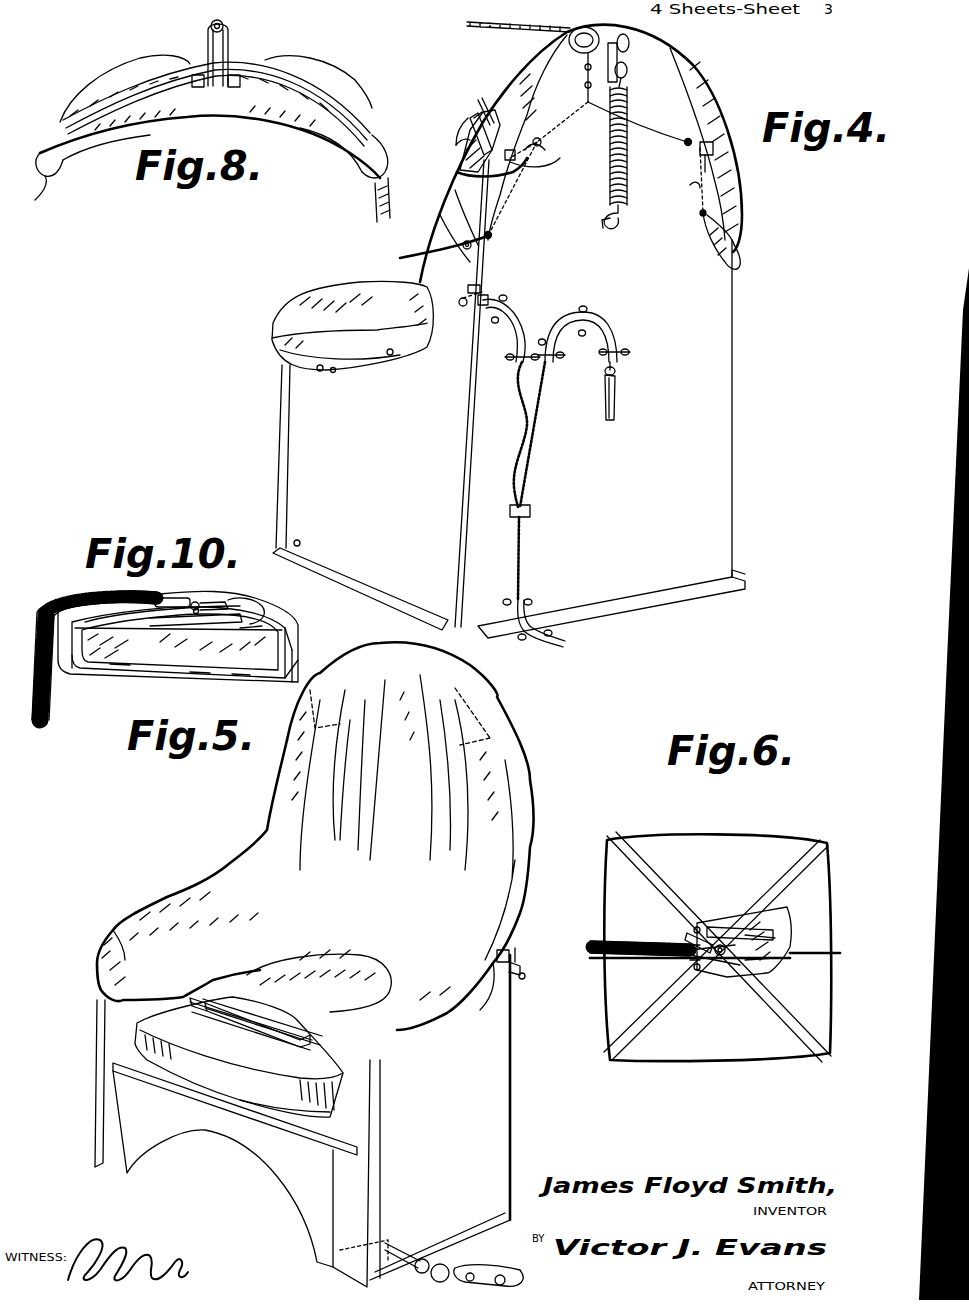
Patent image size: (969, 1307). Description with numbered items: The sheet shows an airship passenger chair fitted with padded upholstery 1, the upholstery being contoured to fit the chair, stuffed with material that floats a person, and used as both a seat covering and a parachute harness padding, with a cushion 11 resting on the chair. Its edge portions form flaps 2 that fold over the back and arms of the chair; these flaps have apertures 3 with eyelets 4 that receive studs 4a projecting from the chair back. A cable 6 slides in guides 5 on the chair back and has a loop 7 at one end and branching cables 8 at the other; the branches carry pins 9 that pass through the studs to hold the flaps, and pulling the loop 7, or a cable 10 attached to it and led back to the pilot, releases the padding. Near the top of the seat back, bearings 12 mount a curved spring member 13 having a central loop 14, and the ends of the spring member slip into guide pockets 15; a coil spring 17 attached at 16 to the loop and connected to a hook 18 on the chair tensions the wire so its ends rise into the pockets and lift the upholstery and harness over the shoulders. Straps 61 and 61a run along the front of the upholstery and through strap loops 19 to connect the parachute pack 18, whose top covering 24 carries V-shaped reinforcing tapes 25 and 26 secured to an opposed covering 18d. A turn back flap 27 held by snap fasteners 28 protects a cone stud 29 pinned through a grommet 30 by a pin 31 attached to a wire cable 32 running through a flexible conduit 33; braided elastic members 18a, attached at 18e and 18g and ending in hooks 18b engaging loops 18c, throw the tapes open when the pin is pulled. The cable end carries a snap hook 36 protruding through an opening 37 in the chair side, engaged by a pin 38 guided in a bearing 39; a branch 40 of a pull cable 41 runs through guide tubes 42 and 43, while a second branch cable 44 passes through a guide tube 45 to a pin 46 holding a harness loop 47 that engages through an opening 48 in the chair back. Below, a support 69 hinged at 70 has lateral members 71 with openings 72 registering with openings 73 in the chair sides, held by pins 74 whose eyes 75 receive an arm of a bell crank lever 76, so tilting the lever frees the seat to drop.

In FIG. 5, the padded upholstery 1 is at (440, 858).
In FIG. 8, the folding flaps 2 is at (348, 127).
In FIG. 4, the folding flaps 2 is at (675, 112).
In FIG. 4, the apertures 3 is at (495, 118).
In FIG. 4, the eyelets 4 is at (478, 128).
In FIG. 4, the studs 4a is at (575, 150).
In FIG. 4, the guides 5 is at (585, 86).
In FIG. 4, the cable 6 is at (585, 62).
In FIG. 4, the loop 7 is at (568, 32).
In FIG. 4, the branching cables 8 is at (530, 152).
In FIG. 4, the pins 9 is at (512, 150).
In FIG. 4, the cable 10 is at (498, 30).
In FIG. 4, the cushion 11 is at (330, 300).
In FIG. 5, the cushion 11 is at (190, 905).
In FIG. 8, the bearings 12 is at (230, 90).
In FIG. 8, the curved spring member 13 is at (290, 95).
In FIG. 4, the curved spring member 13 is at (478, 96).
In FIG. 8, the central loop 14 is at (229, 45).
In FIG. 4, the central loop 14 is at (630, 44).
In FIG. 8, the guide pockets 15 is at (48, 133).
In FIG. 4, the guide pockets 15 is at (458, 146).
In FIG. 8, the attachment point 16 is at (210, 30).
In FIG. 4, the attachment point 16 is at (630, 68).
In FIG. 4, the coil spring 17 is at (608, 168).
In FIG. 4, the parachute pack 18 is at (632, 218).
In FIG. 10, the parachute pack 18 is at (128, 672).
In FIG. 5, the parachute pack 18 is at (328, 972).
In FIG. 6, the parachute pack 18 is at (760, 850).
In FIG. 10, the braided elastic members 18a is at (72, 675).
In FIG. 6, the braided elastic members 18a is at (630, 965).
In FIG. 10, the hooks 18b is at (290, 615).
In FIG. 6, the hooks 18b is at (690, 963).
In FIG. 10, the loops 18c is at (240, 628).
In FIG. 6, the loops 18c is at (728, 930).
In FIG. 10, the covering 18d is at (198, 672).
In FIG. 10, the attachment point 18e is at (240, 676).
In FIG. 10, the attachment point 18g is at (120, 676).
In FIG. 5, the strap loops 19 is at (235, 1000).
In FIG. 10, the top covering 24 is at (240, 670).
In FIG. 6, the top covering 24 is at (815, 910).
In FIG. 10, the reinforcing tapes 25 is at (285, 640).
In FIG. 6, the reinforcing tapes 25 is at (810, 852).
In FIG. 10, the reinforcing tapes 26 is at (85, 622).
In FIG. 6, the reinforcing tapes 26 is at (648, 860).
In FIG. 10, the extension turn back flap 27 is at (245, 604).
In FIG. 6, the extension turn back flap 27 is at (752, 928).
In FIG. 6, the snap fasteners 28 is at (700, 965).
In FIG. 10, the cone stud 29 is at (200, 604).
In FIG. 6, the cone stud 29 is at (726, 958).
In FIG. 10, the grommet 30 is at (196, 612).
In FIG. 6, the grommet 30 is at (718, 960).
In FIG. 10, the pin 31 is at (222, 604).
In FIG. 6, the pin 31 is at (775, 963).
In FIG. 10, the wire cable 32 is at (160, 600).
In FIG. 6, the wire cable 32 is at (700, 935).
In FIG. 10, the flexible conduit 33 is at (50, 612).
In FIG. 6, the flexible conduit 33 is at (610, 940).
In FIG. 4, the snap hook 36 is at (455, 290).
In FIG. 5, the snap hook 36 is at (503, 1010).
In FIG. 4, the opening 37 is at (495, 286).
In FIG. 5, the opening 37 is at (505, 975).
In FIG. 4, the pin 38 is at (473, 340).
In FIG. 5, the pin 38 is at (522, 962).
In FIG. 6, the pin 38 is at (580, 966).
In FIG. 4, the bearing 39 is at (470, 308).
In FIG. 5, the bearing 39 is at (522, 978).
In FIG. 4, the branch 40 is at (520, 430).
In FIG. 4, the pull cable 41 is at (520, 560).
In FIG. 4, the guide tube 42 is at (520, 316).
In FIG. 4, the guide tube 43 is at (528, 620).
In FIG. 4, the second branch cable 44 is at (532, 432).
In FIG. 4, the guide tube 45 is at (610, 318).
In FIG. 4, the pin 46 is at (616, 362).
In FIG. 4, the loop 47 is at (618, 378).
In FIG. 4, the opening 48 is at (615, 410).
In FIG. 8, the strap 61 is at (104, 143).
In FIG. 4, the strap 61 is at (468, 118).
In FIG. 5, the strap 61 is at (270, 1050).
In FIG. 5, the strap 61a is at (240, 1025).
In FIG. 5, the support 69 is at (140, 1123).
In FIG. 5, the hinge connection 70 is at (120, 1060).
In FIG. 5, the lateral members 71 is at (395, 1248).
In FIG. 5, the openings 72 is at (388, 1248).
In FIG. 5, the openings 73 is at (430, 1262).
In FIG. 5, the pins 74 is at (460, 1265).
In FIG. 5, the eyes 75 is at (490, 1268).
In FIG. 5, the bell crank lever 76 is at (505, 1280).